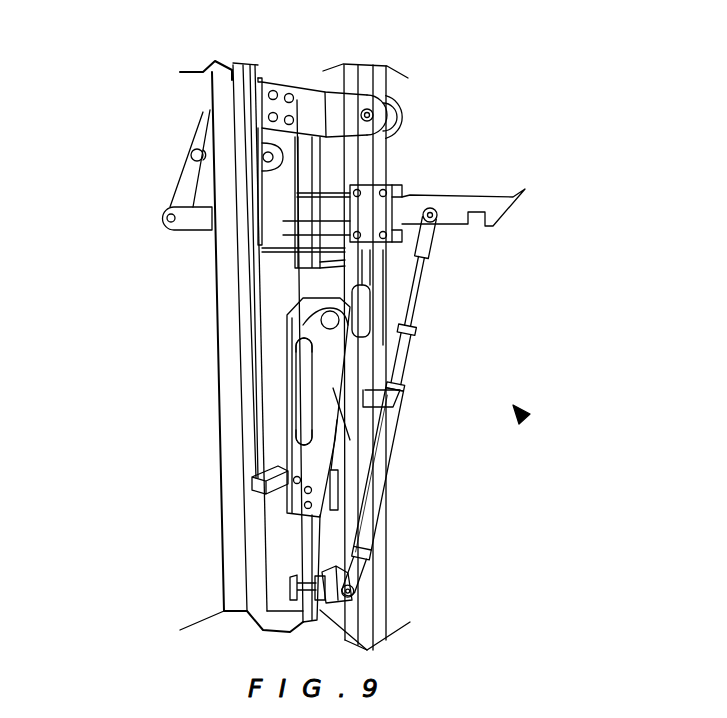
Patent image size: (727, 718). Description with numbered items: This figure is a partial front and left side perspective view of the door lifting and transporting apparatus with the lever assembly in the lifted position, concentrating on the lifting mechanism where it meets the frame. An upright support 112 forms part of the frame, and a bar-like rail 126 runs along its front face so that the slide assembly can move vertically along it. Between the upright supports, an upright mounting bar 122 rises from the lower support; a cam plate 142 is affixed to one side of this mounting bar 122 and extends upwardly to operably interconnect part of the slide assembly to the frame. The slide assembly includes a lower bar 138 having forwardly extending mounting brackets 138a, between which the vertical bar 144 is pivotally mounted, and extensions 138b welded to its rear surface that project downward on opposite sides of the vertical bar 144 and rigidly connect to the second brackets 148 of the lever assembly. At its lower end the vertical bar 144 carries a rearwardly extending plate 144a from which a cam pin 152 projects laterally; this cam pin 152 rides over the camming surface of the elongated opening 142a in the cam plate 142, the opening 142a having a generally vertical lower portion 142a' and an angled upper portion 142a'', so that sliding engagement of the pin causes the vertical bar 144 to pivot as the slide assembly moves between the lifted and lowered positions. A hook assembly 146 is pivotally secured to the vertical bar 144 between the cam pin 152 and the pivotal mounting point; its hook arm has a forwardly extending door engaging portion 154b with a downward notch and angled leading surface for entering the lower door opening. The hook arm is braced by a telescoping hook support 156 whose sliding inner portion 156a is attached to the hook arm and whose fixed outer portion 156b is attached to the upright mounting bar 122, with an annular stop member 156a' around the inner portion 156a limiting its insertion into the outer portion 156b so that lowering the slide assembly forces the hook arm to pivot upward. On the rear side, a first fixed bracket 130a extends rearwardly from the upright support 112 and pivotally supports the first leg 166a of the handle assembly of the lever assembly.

The upright support 112 is at (233, 572).
The upright mounting bar 122 is at (305, 543).
The rail 126 is at (250, 451).
The first fixed bracket 130a is at (163, 213).
The lower bar 138 is at (303, 83).
The mounting bracket 138a is at (383, 103).
The extension 138b is at (353, 164).
The cam plate 142 is at (337, 400).
The elongated opening 142a is at (215, 391).
The lower portion 142a' is at (216, 425).
The upper portion 142a'' is at (207, 336).
The vertical bar 144 is at (370, 262).
The rearwardly extending plate 144a is at (370, 277).
The hook assembly 146 is at (520, 412).
The second bracket 148 is at (283, 262).
The cam pin 152 is at (360, 310).
The door engaging portion 154b is at (513, 197).
The hook support 156 is at (380, 535).
The sliding inner portion 156a is at (452, 362).
The annular stop member 156a' is at (477, 305).
The fixed outer portion 156b is at (383, 490).
The first leg 166a is at (185, 185).